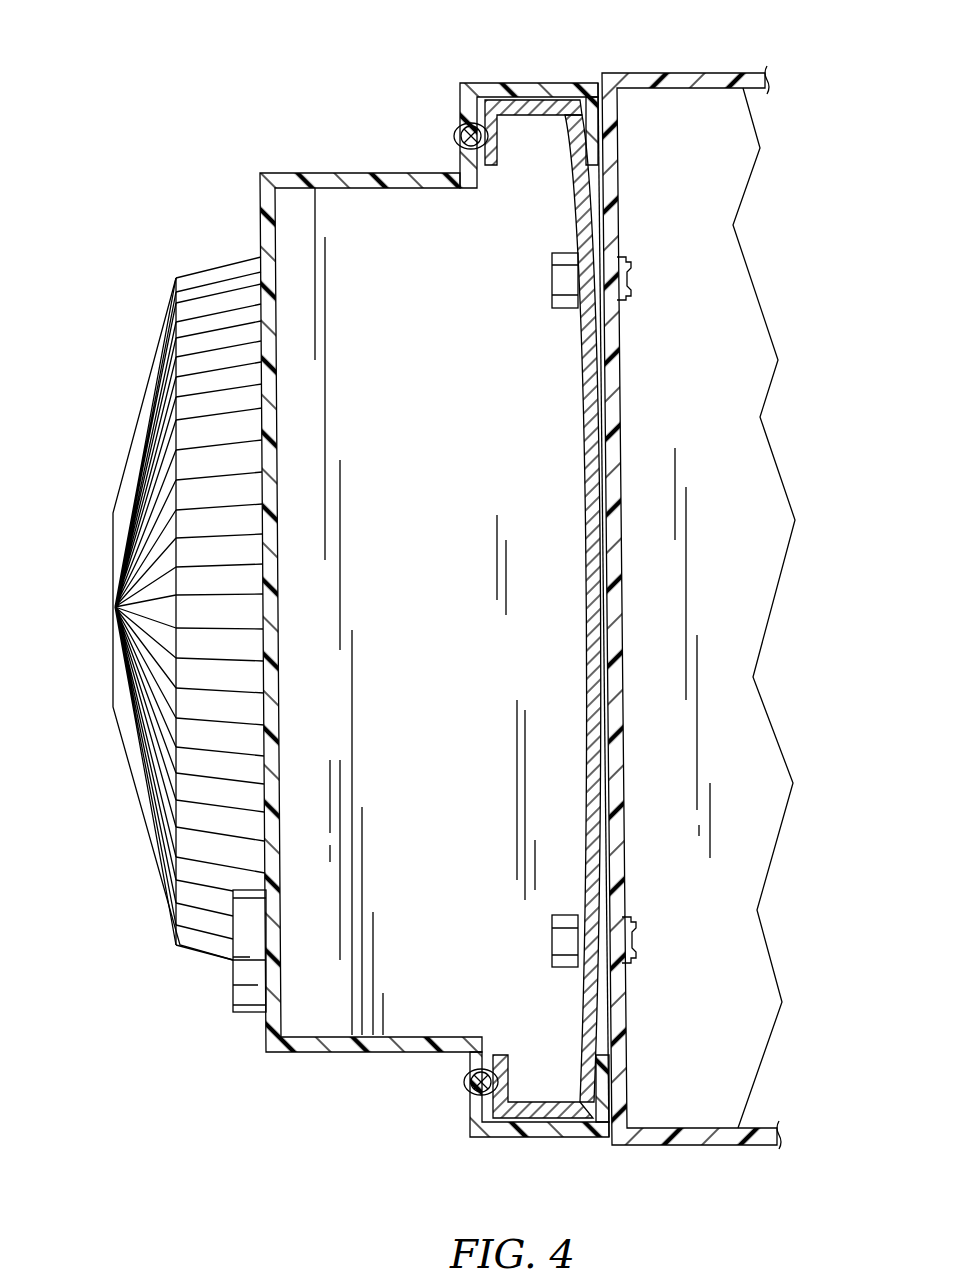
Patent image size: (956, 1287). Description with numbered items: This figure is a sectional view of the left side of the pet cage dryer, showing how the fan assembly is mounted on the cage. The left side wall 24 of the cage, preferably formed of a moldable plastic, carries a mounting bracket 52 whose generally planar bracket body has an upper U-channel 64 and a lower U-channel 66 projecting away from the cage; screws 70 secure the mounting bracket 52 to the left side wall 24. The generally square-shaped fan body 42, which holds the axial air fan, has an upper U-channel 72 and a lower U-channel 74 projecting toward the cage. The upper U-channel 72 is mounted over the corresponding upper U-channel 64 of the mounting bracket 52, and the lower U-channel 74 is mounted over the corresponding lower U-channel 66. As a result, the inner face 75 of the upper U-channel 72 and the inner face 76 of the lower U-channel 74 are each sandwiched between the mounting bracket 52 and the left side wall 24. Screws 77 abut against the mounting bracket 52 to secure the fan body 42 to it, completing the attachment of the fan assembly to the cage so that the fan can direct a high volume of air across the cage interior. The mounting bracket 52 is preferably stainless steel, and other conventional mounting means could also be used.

The left side wall 24 is at (614, 482).
The fan body 42 is at (392, 214).
The mounting bracket 52 is at (585, 560).
The upper U-channel 64 is at (506, 110).
The lower U-channel 66 is at (560, 1112).
The screws 70 is at (620, 262).
The upper U-channel 72 is at (484, 92).
The lower U-channel 74 is at (500, 1135).
The inner face 75 is at (596, 125).
The inner face 76 is at (602, 1075).
The screws 77 is at (453, 128).